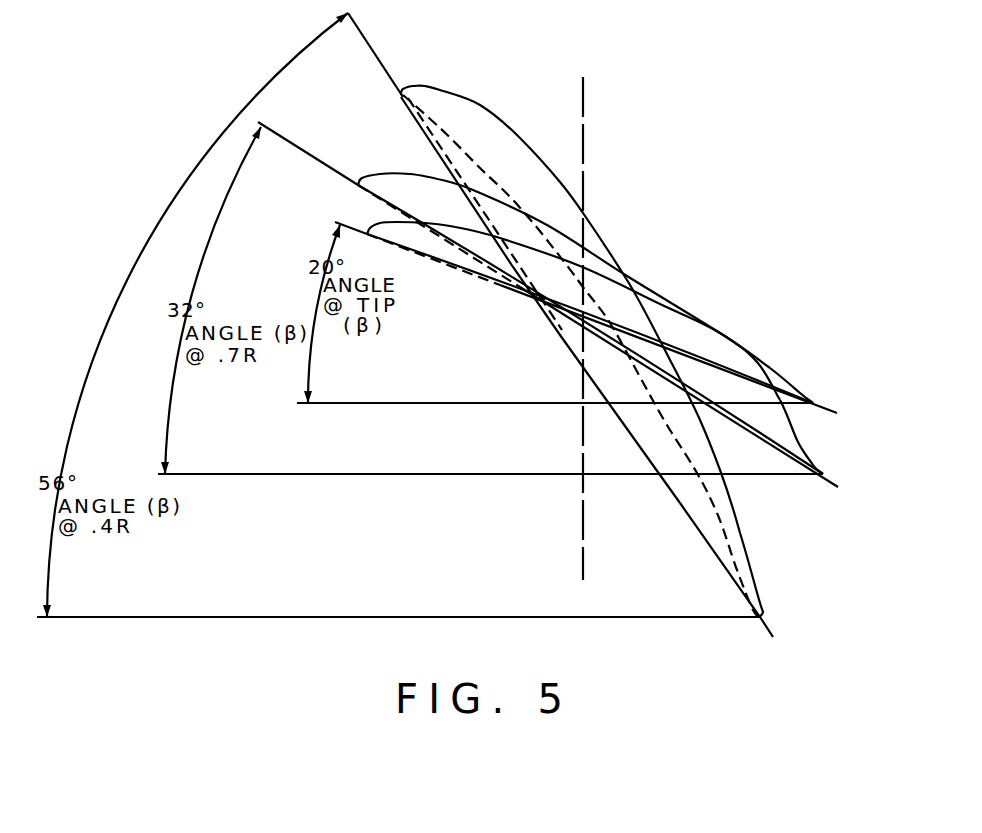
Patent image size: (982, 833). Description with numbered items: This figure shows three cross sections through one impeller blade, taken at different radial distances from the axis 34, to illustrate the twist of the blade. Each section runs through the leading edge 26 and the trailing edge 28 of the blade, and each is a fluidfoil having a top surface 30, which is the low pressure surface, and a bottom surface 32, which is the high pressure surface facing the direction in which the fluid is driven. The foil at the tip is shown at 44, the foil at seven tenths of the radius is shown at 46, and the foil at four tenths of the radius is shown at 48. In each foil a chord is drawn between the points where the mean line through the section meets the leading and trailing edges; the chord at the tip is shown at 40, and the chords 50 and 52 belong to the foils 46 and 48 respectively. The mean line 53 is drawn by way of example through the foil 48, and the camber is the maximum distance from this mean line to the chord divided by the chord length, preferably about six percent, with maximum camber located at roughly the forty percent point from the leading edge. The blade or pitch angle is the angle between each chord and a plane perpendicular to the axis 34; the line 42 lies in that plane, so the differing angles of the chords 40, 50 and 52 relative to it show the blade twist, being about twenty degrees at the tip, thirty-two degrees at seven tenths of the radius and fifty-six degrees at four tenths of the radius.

The leading edge 26 is at (565, 293).
The trailing edge 28 is at (620, 328).
The top surface 30 is at (609, 361).
The bottom surface 32 is at (543, 318).
The axis 34 is at (583, 108).
The chord at the tip 40 is at (417, 260).
The line in the plane perpendicular to the blade axis 42 is at (428, 404).
The foil at the tip 44 is at (740, 355).
The foil at 0.7 R 46 is at (797, 445).
The foil at 0.4 R 48 is at (740, 535).
The chord of the foil at 0.7 R 50 is at (400, 212).
The chord of the foil at 0.4 R 52 is at (438, 137).
The mean line 53 is at (483, 168).